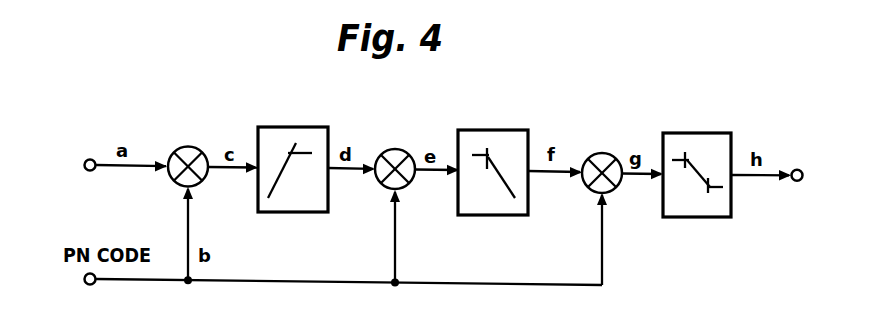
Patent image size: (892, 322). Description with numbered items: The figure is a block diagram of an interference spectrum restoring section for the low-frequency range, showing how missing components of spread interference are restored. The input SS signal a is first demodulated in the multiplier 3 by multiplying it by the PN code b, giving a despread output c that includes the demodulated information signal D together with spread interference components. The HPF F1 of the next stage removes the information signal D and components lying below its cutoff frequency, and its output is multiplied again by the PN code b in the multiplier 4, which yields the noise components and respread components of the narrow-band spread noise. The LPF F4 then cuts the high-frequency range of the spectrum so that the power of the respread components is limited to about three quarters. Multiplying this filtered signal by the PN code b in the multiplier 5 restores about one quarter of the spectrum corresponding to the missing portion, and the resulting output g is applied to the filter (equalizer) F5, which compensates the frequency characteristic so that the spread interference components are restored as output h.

The multiplier 3 is at (185, 145).
The multiplier 4 is at (395, 148).
The multiplier 5 is at (600, 150).
The HPF F1 is at (296, 213).
The LPF F4 is at (497, 216).
The filter (equalizer) F5 is at (697, 218).